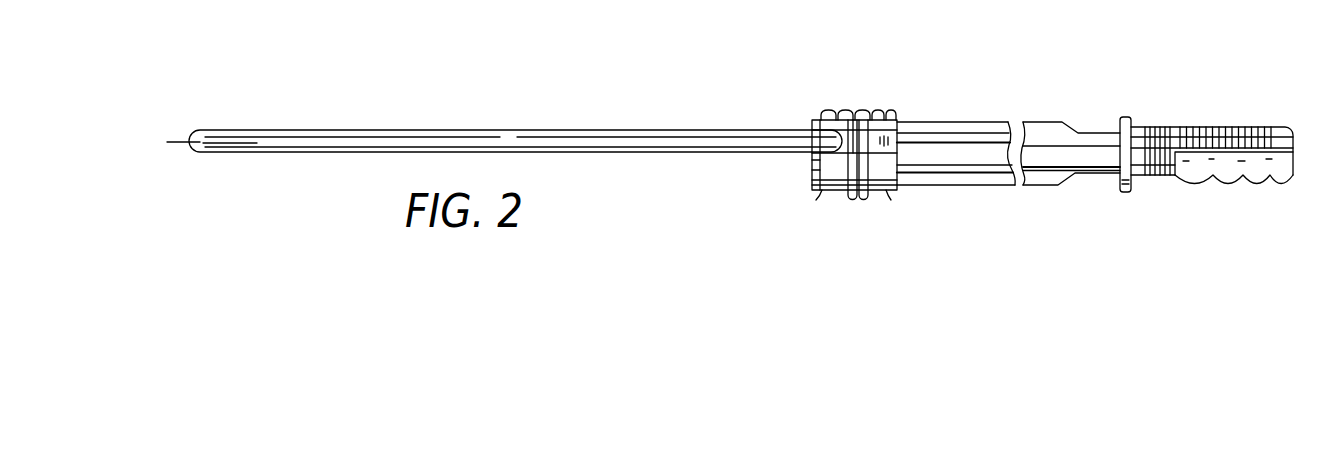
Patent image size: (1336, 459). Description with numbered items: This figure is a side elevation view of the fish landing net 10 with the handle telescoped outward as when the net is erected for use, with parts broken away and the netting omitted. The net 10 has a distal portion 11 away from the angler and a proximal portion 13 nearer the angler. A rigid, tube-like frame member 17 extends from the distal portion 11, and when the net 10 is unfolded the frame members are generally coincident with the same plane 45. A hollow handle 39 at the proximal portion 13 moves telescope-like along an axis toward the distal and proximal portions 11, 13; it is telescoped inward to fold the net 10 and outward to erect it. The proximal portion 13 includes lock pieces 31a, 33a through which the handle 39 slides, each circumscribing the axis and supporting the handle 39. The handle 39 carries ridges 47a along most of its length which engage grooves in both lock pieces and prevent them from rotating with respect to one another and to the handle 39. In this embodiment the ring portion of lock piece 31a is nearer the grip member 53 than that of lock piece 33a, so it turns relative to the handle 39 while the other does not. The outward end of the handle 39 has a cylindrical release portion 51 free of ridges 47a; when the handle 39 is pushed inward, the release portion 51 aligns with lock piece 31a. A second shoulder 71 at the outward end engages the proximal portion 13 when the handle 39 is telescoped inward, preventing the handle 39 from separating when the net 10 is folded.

The fish landing net 10 is at (605, 110).
The distal portion 11 is at (272, 112).
The proximal portion 13 is at (846, 75).
The frame member 17 is at (400, 132).
The lock piece 31a is at (877, 193).
The lock piece 33a is at (823, 193).
The handle 39 is at (947, 93).
The plane 45 is at (183, 142).
The ridges 47a is at (967, 188).
The release portion 51 is at (1093, 171).
The grip member 53 is at (1202, 127).
The second shoulder 71 is at (1130, 192).